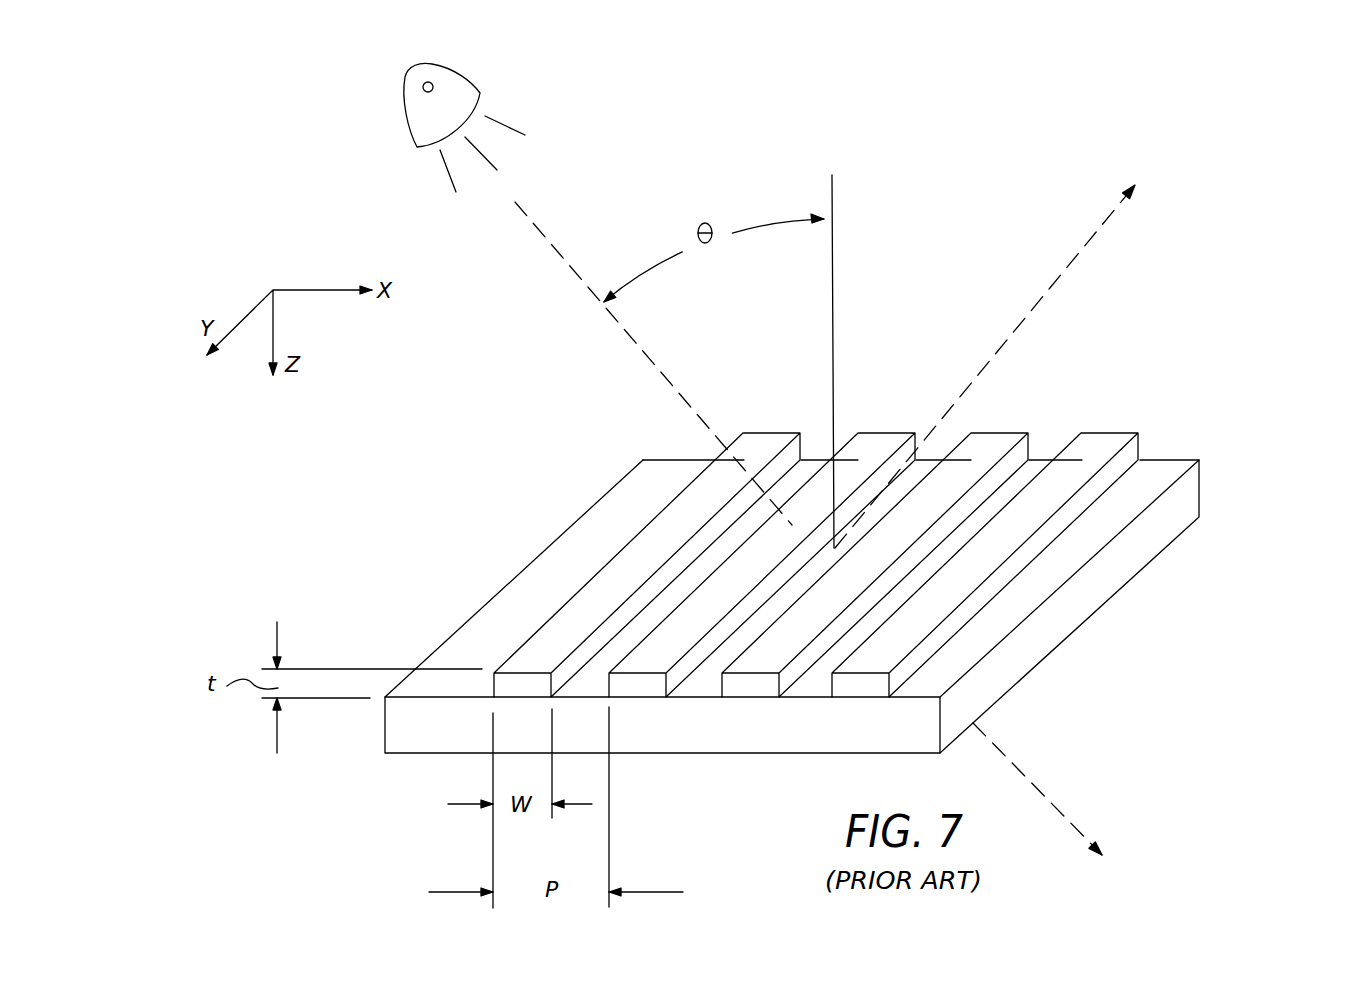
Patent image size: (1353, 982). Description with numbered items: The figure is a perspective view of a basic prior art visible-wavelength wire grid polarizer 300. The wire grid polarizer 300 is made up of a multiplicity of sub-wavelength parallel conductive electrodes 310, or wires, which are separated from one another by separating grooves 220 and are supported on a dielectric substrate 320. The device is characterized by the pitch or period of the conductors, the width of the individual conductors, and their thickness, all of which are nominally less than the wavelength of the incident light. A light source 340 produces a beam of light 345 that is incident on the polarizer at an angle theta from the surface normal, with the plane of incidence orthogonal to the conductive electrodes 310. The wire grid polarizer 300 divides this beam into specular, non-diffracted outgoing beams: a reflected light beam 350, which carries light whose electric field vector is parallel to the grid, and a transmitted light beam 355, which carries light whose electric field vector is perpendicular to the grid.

The wire grid polarizer 300 is at (858, 507).
The parallel conductive electrodes 310 is at (1105, 438).
The dielectric substrate 320 is at (1118, 588).
The separating grooves 220 is at (1046, 447).
The light source 340 is at (465, 77).
The beam of light 345 is at (552, 243).
The reflected light beam 350 is at (1087, 248).
The transmitted light beam 355 is at (1033, 780).